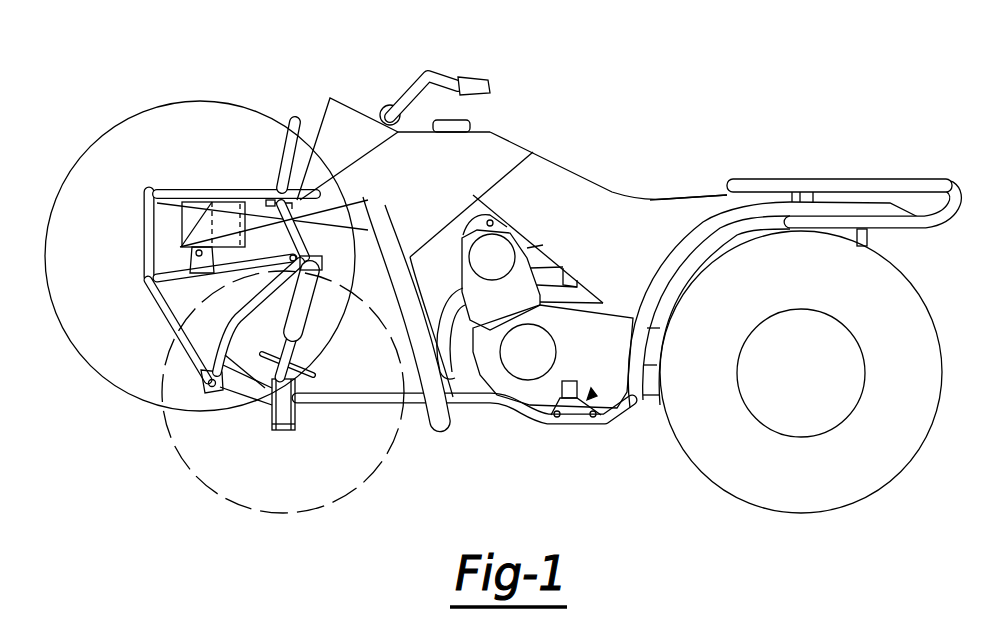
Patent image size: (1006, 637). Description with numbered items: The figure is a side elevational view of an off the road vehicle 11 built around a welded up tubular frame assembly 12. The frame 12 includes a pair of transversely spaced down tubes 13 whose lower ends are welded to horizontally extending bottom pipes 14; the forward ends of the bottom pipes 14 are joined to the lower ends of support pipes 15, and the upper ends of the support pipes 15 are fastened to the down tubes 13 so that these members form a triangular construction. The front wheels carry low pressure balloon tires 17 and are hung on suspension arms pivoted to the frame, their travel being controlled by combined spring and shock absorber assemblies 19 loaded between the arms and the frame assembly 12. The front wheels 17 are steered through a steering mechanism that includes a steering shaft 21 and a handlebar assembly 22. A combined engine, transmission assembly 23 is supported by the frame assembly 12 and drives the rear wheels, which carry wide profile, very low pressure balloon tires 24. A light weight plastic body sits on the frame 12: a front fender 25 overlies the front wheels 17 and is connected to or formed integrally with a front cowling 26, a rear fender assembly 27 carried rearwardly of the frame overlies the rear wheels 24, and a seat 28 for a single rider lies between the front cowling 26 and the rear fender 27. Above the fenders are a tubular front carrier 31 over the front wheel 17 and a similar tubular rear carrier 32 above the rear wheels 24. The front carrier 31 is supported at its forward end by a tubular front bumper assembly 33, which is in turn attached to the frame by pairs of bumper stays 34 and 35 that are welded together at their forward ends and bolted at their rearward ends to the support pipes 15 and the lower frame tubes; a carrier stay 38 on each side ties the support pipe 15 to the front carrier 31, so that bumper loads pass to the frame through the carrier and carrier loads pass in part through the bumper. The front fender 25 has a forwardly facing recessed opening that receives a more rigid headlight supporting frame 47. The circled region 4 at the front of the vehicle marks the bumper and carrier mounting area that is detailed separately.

The front wheel 4 is at (240, 105).
The off the road vehicle 11 is at (579, 156).
The frame assembly 12 is at (534, 426).
The down tubes 13 is at (473, 388).
The bottom pipes 14 is at (348, 406).
The support pipes 15 is at (233, 325).
The front wheel balloon tires 17 is at (228, 498).
The combined spring and shock absorber assemblies 19 is at (310, 322).
The steering shaft 21 is at (270, 347).
The handlebar assembly 22 is at (445, 77).
The engine, transmission assembly 23 is at (584, 412).
The rear wheel balloon tires 24 is at (917, 452).
The front fender 25 is at (376, 247).
The front cowling 26 is at (337, 113).
The rear fender assembly 27 is at (791, 208).
The seat 28 is at (651, 199).
The front carrier 31 is at (212, 188).
The rear carrier 32 is at (897, 180).
The front bumper assembly 33 is at (143, 254).
The bumper stays 34 is at (158, 300).
The bumper stays 35 is at (248, 198).
The carrier stay 38 is at (358, 206).
The headlight supporting frame 47 is at (160, 220).